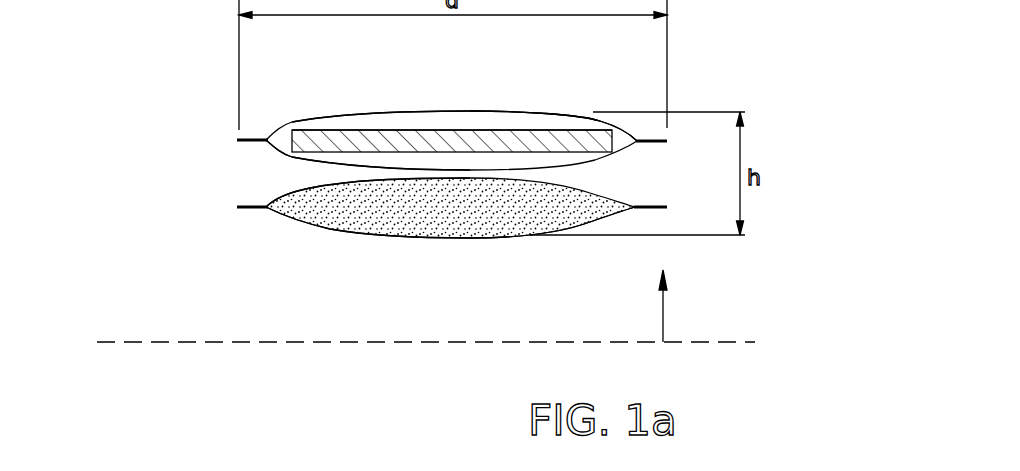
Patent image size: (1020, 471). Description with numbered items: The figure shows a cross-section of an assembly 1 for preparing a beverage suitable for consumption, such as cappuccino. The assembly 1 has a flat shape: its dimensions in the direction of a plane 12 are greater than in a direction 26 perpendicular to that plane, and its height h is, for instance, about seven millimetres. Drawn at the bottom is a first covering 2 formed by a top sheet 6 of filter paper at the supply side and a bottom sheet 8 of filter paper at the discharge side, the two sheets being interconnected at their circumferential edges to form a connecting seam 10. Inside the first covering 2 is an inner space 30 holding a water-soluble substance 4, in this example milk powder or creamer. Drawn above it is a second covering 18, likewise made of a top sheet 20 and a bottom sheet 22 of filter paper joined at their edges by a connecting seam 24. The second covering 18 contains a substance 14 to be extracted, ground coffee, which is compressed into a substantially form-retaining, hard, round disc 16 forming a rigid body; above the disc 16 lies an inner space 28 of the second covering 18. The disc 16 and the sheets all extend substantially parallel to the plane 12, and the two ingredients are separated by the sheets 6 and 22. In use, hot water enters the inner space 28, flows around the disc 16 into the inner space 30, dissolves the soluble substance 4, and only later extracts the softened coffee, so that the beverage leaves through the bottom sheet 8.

The assembly 1 is at (772, 310).
The first covering 2 is at (587, 220).
The water-soluble substance 4 is at (517, 227).
The top sheet 6 is at (276, 193).
The bottom sheet 8 is at (347, 230).
The connecting seam 10 is at (252, 210).
The plane 12 is at (358, 343).
The substance to be extracted 14 is at (345, 140).
The disc 16 is at (453, 129).
The second covering 18 is at (563, 115).
The top sheet 20 is at (392, 100).
The bottom sheet 22 is at (268, 155).
The connecting seam 24 is at (177, 100).
The direction 26 is at (665, 316).
The inner space 28 is at (398, 122).
The inner space 30 is at (460, 225).